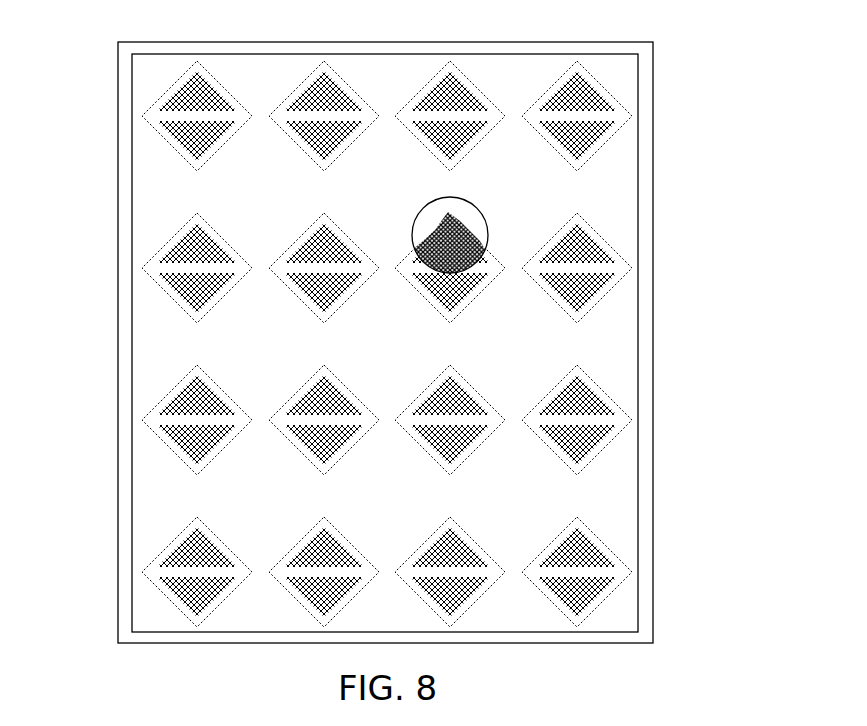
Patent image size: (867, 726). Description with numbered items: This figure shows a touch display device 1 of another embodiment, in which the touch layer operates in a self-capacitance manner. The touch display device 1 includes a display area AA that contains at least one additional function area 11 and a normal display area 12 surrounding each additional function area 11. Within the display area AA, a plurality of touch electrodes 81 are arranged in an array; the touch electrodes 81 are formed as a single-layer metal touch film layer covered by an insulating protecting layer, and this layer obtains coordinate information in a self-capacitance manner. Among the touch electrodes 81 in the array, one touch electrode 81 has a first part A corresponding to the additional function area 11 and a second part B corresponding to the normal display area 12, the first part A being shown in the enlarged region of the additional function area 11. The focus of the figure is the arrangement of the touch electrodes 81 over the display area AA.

The touch display device 1 is at (118, 103).
The display area AA is at (382, 344).
The normal display area 12 is at (603, 67).
The touch electrodes 81 is at (608, 117).
The additional function area 11 is at (565, 223).
The first part A is at (490, 250).
The second part B is at (465, 303).